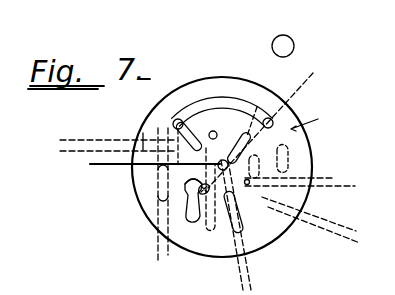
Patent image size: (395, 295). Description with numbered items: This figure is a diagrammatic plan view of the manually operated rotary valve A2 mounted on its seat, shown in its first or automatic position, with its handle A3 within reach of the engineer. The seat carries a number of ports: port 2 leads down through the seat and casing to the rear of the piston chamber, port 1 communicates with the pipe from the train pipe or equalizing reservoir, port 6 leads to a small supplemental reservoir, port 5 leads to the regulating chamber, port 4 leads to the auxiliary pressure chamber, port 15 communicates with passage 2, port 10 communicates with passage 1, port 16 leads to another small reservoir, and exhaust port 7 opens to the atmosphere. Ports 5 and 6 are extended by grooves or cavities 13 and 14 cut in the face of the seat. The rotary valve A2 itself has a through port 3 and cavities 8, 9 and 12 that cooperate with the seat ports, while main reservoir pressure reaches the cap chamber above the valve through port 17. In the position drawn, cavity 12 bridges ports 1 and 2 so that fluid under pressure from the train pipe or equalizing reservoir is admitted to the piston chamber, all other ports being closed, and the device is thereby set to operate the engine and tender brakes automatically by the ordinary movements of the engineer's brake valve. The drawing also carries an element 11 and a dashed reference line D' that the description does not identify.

The port 1 is at (250, 204).
The port 2 is at (145, 156).
The through port 3 is at (217, 129).
The port 4 is at (213, 232).
The port 5 is at (311, 220).
The port 6 is at (300, 189).
The exhaust port 7 is at (221, 161).
The cavity 8 is at (243, 213).
The cavity 9 is at (189, 203).
The port 10 is at (187, 184).
The slot 11 is at (236, 144).
The cavity 12 is at (222, 111).
The extension groove 13 is at (290, 166).
The extension groove 14 is at (261, 165).
The port 15 is at (191, 136).
The port 16 is at (159, 195).
The port 17 is at (298, 47).
The rotary valve A2 is at (315, 121).
The handle A3 is at (124, 157).
The direction line D' is at (255, 134).